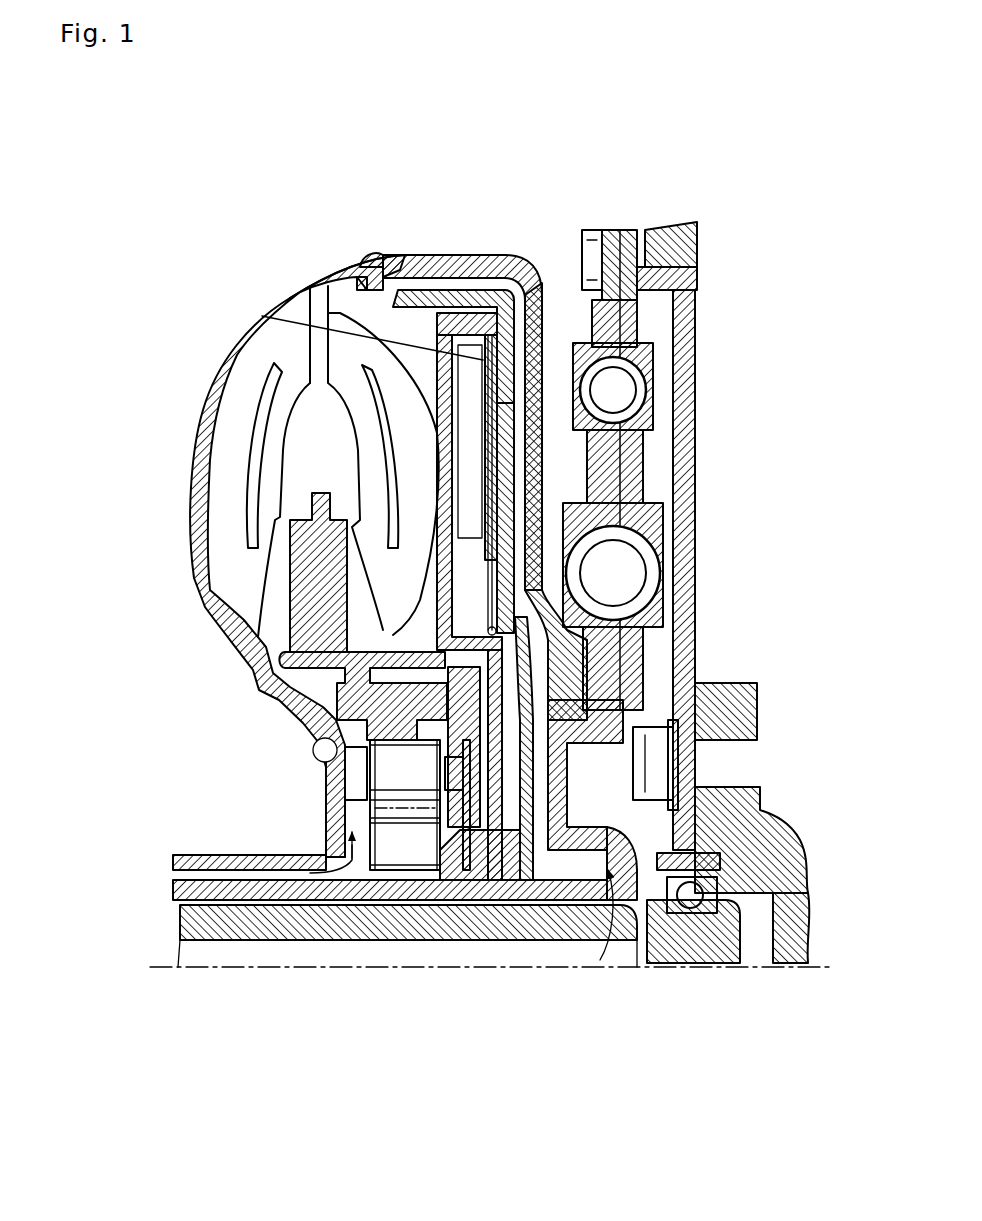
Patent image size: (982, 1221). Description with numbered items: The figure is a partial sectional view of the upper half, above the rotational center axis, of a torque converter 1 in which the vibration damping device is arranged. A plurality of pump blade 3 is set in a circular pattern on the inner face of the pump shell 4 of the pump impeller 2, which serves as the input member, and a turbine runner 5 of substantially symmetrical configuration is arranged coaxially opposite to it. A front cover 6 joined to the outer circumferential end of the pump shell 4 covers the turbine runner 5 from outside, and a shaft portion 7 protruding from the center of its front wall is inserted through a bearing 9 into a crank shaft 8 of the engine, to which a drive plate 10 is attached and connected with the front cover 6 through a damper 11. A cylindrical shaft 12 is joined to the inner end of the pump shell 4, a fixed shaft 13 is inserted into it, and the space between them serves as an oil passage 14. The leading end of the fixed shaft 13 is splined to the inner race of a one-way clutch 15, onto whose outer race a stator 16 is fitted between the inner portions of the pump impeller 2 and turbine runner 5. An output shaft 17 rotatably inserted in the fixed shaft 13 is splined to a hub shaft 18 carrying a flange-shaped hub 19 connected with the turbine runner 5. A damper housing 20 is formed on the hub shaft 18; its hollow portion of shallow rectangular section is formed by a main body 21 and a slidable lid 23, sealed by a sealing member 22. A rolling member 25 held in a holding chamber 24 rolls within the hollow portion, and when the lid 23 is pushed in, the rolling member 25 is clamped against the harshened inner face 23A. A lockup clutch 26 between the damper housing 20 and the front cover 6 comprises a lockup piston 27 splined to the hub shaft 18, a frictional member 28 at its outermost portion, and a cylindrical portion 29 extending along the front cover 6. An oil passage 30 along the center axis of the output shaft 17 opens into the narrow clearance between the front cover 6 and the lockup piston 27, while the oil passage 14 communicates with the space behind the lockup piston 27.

The torque converter 1 is at (268, 278).
The pump impeller 2 is at (233, 333).
The pump blade 3 is at (243, 383).
The pump shell 4 is at (200, 398).
The turbine runner 5 is at (347, 287).
The front cover 6 is at (497, 285).
The shaft portion 7 is at (692, 945).
The crank shaft 8 is at (765, 855).
The bearing 9 is at (780, 897).
The drive plate 10 is at (695, 390).
The damper 11 is at (647, 353).
The cylindrical shaft 12 is at (222, 855).
The fixed shaft 13 is at (180, 890).
The oil passage 14 is at (270, 873).
The one-way clutch 15 is at (400, 797).
The stator 16 is at (307, 613).
The output shaft 17 is at (262, 930).
The hub shaft 18 is at (498, 890).
The hub 19 is at (465, 790).
The damper housing 20 is at (460, 310).
The main body 21 is at (393, 280).
The sealing member 22 is at (530, 340).
The lid 23 is at (400, 652).
The inner face 23A is at (357, 302).
The holding chamber 24 is at (465, 568).
The rolling member 25 is at (465, 455).
The lockup clutch 26 is at (563, 503).
The lockup piston 27 is at (520, 518).
The frictional member 28 is at (545, 300).
The cylindrical portion 29 is at (478, 320).
The oil passage 30 is at (562, 960).